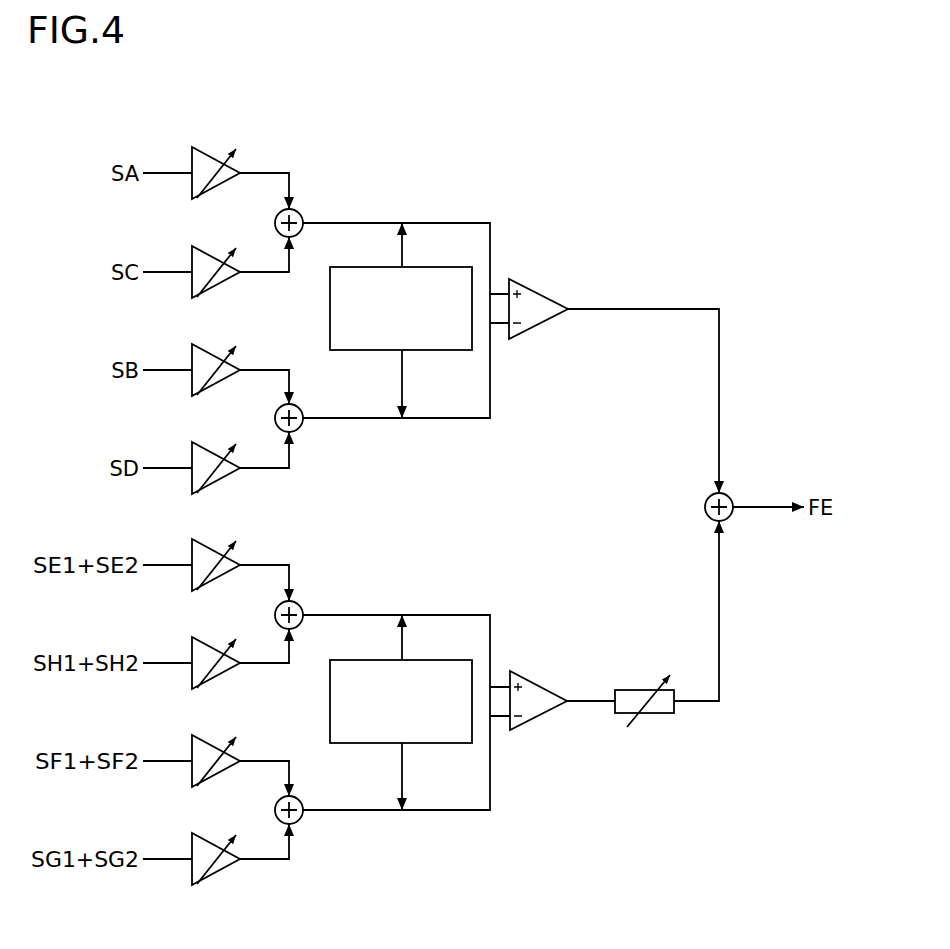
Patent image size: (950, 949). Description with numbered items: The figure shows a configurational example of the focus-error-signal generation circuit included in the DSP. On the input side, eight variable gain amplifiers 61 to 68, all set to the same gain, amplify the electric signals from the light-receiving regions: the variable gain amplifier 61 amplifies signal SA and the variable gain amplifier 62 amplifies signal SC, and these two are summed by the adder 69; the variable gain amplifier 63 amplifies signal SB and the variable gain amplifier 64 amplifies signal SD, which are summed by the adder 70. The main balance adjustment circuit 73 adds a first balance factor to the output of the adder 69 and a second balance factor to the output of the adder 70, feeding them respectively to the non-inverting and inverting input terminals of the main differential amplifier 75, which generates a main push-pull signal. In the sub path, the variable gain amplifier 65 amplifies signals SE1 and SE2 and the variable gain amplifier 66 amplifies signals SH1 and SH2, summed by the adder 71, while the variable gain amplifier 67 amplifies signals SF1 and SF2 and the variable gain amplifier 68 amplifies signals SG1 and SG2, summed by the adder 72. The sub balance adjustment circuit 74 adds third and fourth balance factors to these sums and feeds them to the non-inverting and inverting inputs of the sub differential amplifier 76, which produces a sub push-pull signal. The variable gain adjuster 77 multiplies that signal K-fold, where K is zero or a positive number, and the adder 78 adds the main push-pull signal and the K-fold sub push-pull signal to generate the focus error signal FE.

The variable gain amplifier 61 is at (214, 156).
The variable gain amplifier 62 is at (214, 255).
The variable gain amplifier 63 is at (214, 353).
The variable gain amplifier 64 is at (214, 451).
The variable gain amplifier 65 is at (214, 548).
The variable gain amplifier 66 is at (214, 646).
The variable gain amplifier 67 is at (214, 744).
The variable gain amplifier 68 is at (214, 842).
The adder 69 is at (302, 215).
The adder 70 is at (302, 409).
The adder 71 is at (302, 607).
The adder 72 is at (302, 802).
The main balance adjustment circuit 73 is at (442, 265).
The sub balance adjustment circuit 74 is at (442, 665).
The main differential amplifier 75 is at (538, 292).
The sub differential amplifier 76 is at (538, 690).
The variable gain adjuster 77 is at (645, 690).
The adder 78 is at (730, 499).